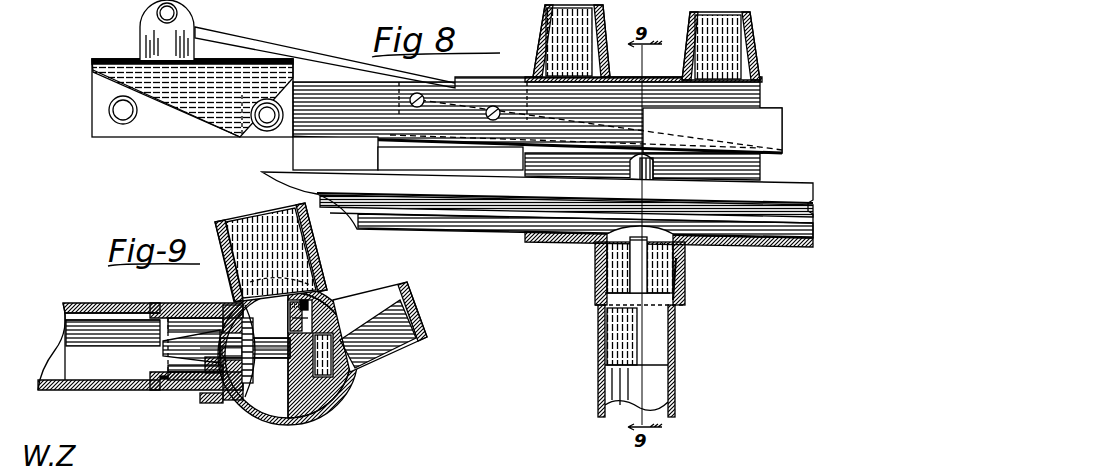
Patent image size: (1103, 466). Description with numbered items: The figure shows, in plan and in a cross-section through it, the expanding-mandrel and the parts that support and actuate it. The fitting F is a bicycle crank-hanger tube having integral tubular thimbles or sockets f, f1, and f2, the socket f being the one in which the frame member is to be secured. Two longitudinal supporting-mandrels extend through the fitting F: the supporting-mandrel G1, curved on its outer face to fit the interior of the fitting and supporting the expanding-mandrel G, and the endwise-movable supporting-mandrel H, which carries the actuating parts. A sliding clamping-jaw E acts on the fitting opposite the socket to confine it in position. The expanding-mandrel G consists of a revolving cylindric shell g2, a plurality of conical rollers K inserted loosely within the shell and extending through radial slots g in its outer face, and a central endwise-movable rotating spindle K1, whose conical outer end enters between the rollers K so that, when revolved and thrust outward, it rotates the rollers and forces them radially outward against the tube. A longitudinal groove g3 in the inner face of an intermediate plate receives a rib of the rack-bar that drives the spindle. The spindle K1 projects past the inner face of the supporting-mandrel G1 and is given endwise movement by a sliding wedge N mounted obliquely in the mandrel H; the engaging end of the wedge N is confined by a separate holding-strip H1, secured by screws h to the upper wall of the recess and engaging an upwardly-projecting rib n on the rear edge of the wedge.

In FIG. 8, the sliding wedge N is at (340, 76).
In FIG. 8, the upwardly-projecting rib n is at (307, 62).
In FIG. 9, the upwardly-projecting rib n is at (296, 320).
In FIG. 8, the supporting-mandrel H is at (537, 115).
In FIG. 8, the holding-strip H1 is at (408, 153).
In FIG. 9, the holding-strip H1 is at (285, 323).
In FIG. 8, the endwise-movable rotating spindle K1 is at (625, 167).
In FIG. 9, the endwise-movable rotating spindle K1 is at (210, 373).
In FIG. 8, the tubular thimbles or sockets f2 is at (646, 42).
In FIG. 9, the tubular thimbles or sockets f2 is at (403, 293).
In FIG. 8, the supporting-mandrel G1 is at (473, 210).
In FIG. 8, the expanding-mandrel G is at (612, 268).
In FIG. 9, the expanding-mandrel G is at (165, 361).
In FIG. 8, the thimble or socket f is at (676, 273).
In FIG. 9, the thimble or socket f is at (160, 390).
In FIG. 8, the radial slots g is at (626, 276).
In FIG. 8, the conical rollers K is at (683, 298).
In FIG. 9, the conical rollers K is at (183, 328).
In FIG. 9, the fitting F is at (78, 392).
In FIG. 9, the longitudinal groove g3 is at (240, 385).
In FIG. 9, the revolving cylindric shell g2 is at (253, 397).
In FIG. 9, the sliding clamping-jaw E is at (340, 398).
In FIG. 9, the screws h is at (304, 302).
In FIG. 9, the tubular thimble or socket f1 is at (271, 252).